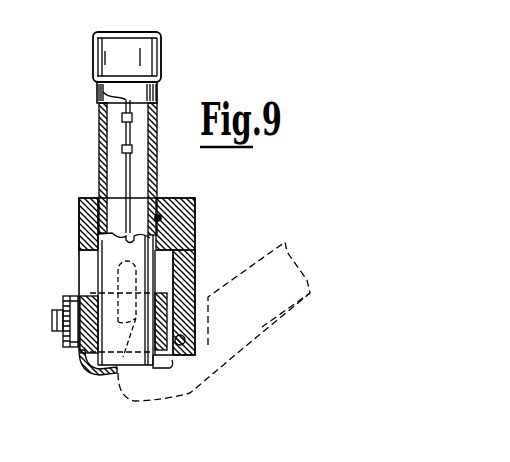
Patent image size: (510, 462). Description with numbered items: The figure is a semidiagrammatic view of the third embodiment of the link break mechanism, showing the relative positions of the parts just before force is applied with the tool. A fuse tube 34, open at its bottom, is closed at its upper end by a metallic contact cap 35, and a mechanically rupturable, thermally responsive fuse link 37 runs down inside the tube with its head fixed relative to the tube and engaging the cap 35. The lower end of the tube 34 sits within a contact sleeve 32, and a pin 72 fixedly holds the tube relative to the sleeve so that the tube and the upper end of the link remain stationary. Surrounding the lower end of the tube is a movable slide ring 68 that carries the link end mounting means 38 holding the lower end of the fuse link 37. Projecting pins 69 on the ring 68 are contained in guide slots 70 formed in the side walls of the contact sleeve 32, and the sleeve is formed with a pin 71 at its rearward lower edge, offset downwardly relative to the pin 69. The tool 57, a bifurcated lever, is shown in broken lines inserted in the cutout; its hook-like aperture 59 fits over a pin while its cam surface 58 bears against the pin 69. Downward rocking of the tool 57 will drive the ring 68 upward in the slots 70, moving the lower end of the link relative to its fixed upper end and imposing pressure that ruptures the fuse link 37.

The metallic contact cap 35 is at (93, 50).
The fuse tube 34 is at (98, 123).
The contact sleeve 32 is at (77, 199).
The pin 72 is at (160, 218).
The guide slots 70 is at (127, 260).
The link end mounting means 38 is at (75, 300).
The projecting pins 69 is at (143, 318).
The movable slide ring 68 is at (152, 322).
The pin 71 is at (187, 341).
The hook-like aperture 59 is at (171, 368).
The fuse link 37 is at (82, 360).
The tool 57 is at (262, 327).
The cam surface 58 is at (118, 380).